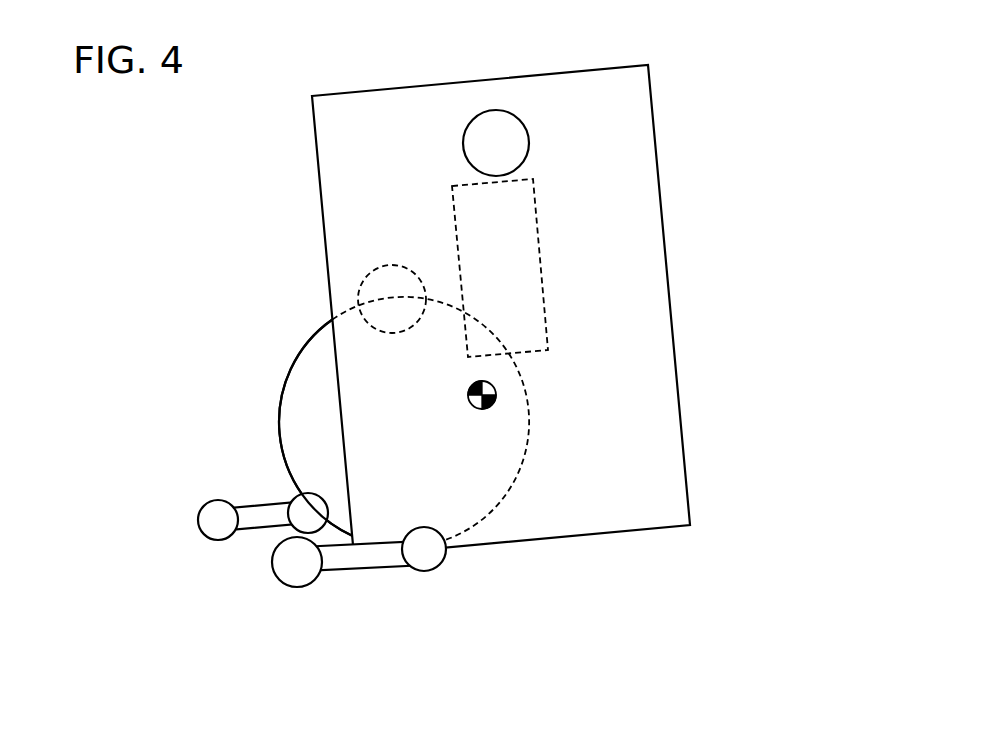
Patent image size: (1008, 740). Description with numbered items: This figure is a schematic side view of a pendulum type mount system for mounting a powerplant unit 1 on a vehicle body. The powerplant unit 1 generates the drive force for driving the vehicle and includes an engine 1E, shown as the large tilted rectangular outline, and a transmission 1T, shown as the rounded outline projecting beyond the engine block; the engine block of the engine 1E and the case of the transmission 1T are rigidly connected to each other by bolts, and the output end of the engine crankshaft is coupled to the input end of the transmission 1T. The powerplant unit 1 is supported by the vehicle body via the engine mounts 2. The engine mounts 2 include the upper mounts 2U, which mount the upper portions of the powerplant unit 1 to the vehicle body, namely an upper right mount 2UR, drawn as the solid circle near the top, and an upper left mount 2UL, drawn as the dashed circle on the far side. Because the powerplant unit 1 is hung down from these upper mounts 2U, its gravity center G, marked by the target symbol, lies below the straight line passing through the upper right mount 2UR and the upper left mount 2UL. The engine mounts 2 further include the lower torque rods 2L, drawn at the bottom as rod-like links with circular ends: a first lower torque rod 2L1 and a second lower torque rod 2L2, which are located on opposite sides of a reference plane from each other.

The powerplant unit 1 is at (170, 172).
The engine 1E is at (333, 183).
The transmission 1T is at (283, 422).
The engine mounts 2 is at (475, 377).
The upper mounts 2U is at (513, 221).
The lower torque rods 2L is at (330, 538).
The upper right mount 2UR is at (513, 137).
The upper left mount 2UL is at (368, 275).
The first lower torque rod 2L1 is at (375, 562).
The second lower torque rod 2L2 is at (257, 510).
The gravity center G is at (467, 395).